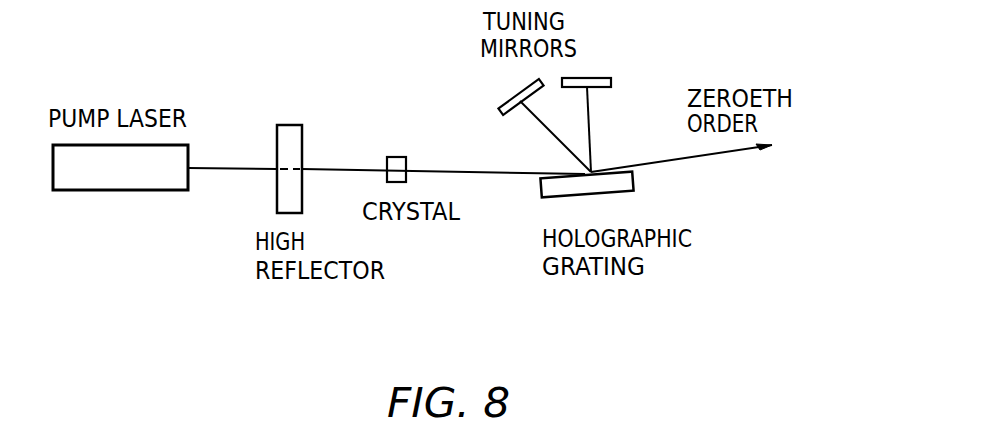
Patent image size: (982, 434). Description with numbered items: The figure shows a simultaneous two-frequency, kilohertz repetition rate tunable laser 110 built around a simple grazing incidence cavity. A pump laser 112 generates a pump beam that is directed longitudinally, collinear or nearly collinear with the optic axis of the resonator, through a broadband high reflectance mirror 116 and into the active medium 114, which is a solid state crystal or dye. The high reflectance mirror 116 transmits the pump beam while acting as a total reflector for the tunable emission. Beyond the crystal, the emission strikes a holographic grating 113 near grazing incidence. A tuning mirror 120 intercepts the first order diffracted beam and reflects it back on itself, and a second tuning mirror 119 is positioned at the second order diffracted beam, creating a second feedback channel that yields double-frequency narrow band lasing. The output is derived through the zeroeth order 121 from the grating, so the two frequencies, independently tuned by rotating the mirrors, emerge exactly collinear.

The laser 110 is at (434, 309).
The pump laser 112 is at (128, 192).
The holographic grating 113 is at (622, 192).
The active medium 114 is at (395, 157).
The high reflectance mirror 116 is at (292, 124).
The second tuning mirror 119 is at (506, 103).
The tuning mirror 120 is at (600, 78).
The zeroeth order output 121 is at (737, 152).